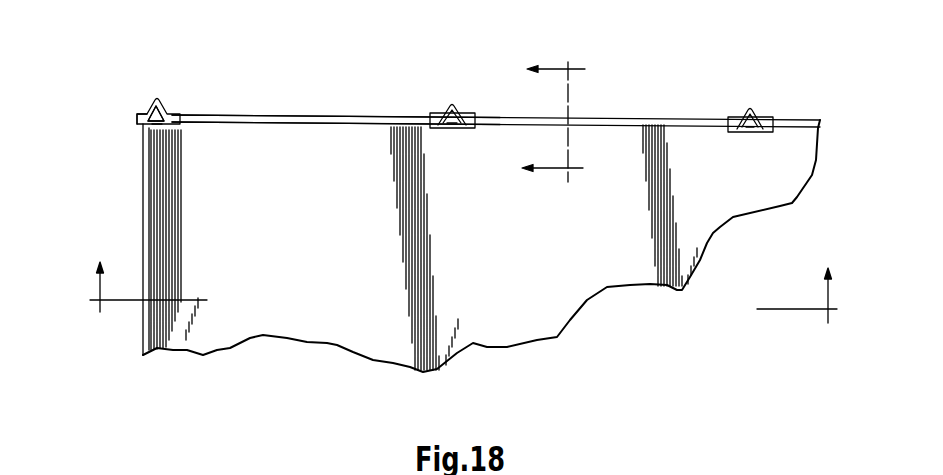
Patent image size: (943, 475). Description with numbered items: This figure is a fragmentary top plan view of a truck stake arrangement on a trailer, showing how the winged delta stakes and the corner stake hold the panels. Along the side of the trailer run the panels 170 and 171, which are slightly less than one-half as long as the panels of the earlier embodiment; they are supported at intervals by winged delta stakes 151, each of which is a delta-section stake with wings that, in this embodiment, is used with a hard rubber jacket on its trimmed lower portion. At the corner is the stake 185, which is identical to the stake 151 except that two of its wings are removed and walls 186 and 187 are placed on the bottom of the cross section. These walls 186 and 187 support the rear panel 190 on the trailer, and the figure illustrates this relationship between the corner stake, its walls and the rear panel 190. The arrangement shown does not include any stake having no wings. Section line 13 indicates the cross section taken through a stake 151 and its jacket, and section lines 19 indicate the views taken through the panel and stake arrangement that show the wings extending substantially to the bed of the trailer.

The section line 13- 13 is at (563, 122).
The section line 19- 19 is at (466, 303).
The winged delta stake 151 is at (447, 97).
The panel 170 is at (622, 118).
The panel 171 is at (308, 116).
The stake 185 is at (178, 88).
The wall 186 is at (142, 130).
The wall 187 is at (157, 127).
The rear panel 190 is at (143, 226).